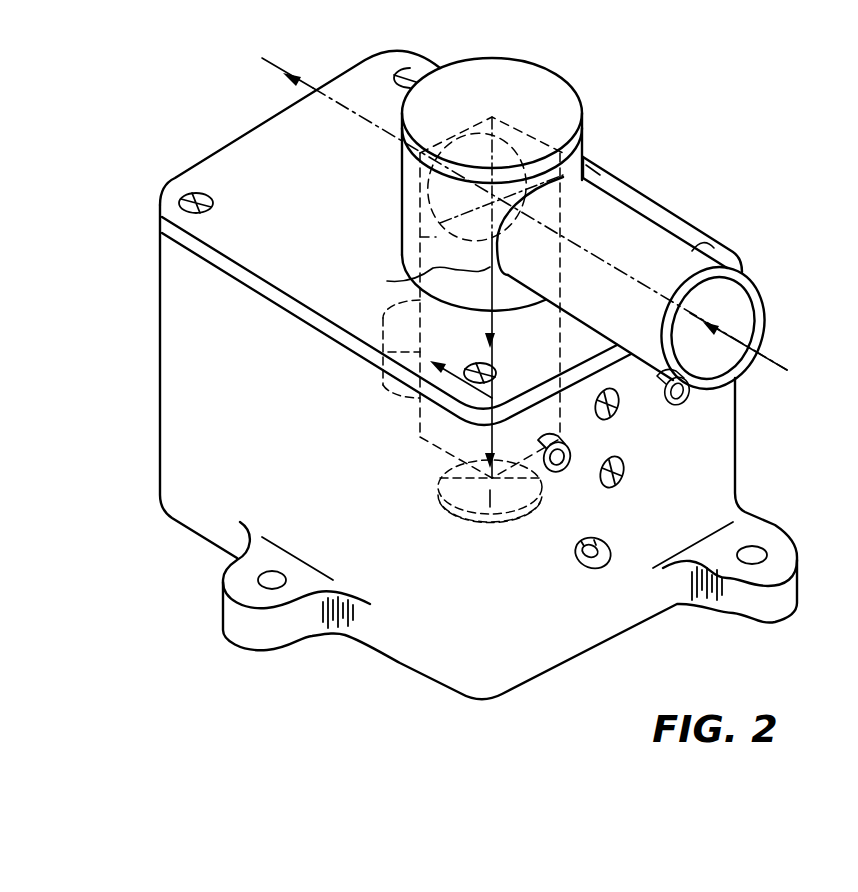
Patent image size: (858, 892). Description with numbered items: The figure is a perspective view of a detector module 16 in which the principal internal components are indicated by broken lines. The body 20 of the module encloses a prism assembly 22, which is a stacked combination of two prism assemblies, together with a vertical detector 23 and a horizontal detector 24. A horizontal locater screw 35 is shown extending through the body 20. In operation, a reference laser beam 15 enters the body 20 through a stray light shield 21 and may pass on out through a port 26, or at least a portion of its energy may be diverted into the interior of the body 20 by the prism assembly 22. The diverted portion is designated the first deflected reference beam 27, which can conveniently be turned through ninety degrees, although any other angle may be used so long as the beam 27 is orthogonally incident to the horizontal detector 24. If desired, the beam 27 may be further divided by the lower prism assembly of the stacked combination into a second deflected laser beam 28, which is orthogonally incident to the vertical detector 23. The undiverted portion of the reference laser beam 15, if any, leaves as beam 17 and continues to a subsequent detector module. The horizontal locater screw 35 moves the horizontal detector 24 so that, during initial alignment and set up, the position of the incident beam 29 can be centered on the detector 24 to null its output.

The reference laser beam 15 is at (778, 368).
The detector module 16 is at (160, 432).
The beam 17 is at (304, 86).
The body 20 is at (175, 332).
The stray light shield 21 is at (763, 307).
The prism assembly 22 is at (590, 167).
The vertical detector 23 is at (392, 384).
The horizontal detector 24 is at (485, 505).
The port 26 is at (477, 140).
The first deflected reference beam 27 is at (420, 279).
The second deflected laser beam 28 is at (497, 340).
The incident beam 29 is at (512, 457).
The horizontal locater screw 35 is at (610, 545).